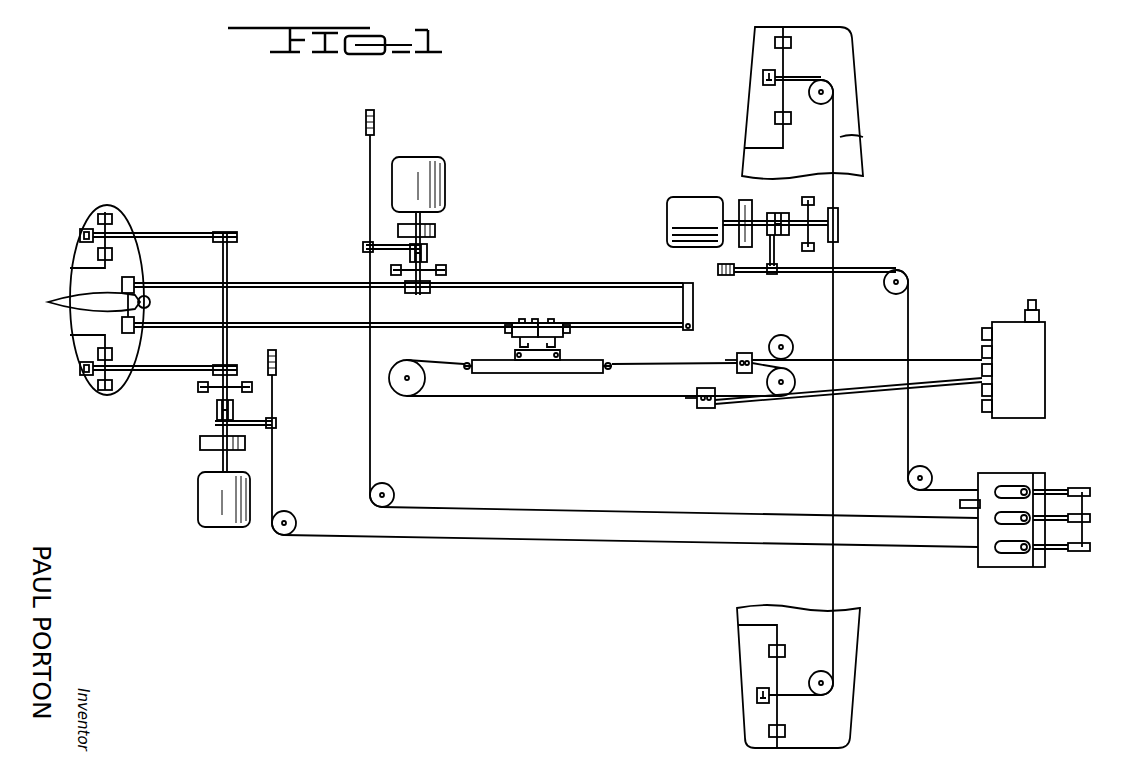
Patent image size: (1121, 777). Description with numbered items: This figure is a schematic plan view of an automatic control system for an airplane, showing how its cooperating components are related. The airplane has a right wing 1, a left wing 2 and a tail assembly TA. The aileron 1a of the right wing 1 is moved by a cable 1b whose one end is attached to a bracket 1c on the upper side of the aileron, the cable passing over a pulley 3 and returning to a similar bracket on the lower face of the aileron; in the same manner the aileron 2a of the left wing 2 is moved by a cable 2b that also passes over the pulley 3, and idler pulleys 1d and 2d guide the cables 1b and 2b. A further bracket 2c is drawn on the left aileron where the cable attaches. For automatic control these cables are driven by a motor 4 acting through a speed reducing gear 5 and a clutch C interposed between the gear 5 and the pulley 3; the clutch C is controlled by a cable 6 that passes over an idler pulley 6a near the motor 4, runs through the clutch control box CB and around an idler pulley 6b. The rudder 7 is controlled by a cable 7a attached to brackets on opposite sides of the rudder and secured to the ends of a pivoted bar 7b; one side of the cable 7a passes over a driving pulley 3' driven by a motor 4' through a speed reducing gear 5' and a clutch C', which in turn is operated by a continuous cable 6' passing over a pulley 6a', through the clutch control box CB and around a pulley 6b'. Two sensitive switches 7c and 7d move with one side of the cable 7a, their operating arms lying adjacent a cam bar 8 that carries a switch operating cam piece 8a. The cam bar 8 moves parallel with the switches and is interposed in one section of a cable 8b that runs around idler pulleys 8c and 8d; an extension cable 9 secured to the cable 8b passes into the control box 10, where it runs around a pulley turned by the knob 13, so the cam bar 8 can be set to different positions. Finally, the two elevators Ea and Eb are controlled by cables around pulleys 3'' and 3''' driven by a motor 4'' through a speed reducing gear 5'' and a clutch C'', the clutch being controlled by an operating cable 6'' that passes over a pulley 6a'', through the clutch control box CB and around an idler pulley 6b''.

The tail assembly TA is at (118, 230).
The elevator Ea is at (80, 236).
The elevator Eb is at (80, 369).
The rudder 7 is at (62, 306).
The cable 7a is at (322, 322).
The pivoted bar 7b is at (695, 318).
The sensitive switch 7c is at (553, 322).
The sensitive switch 7d is at (530, 323).
The cam bar 8 is at (553, 374).
The switch operating cam piece 8a is at (527, 362).
The cable 8b is at (700, 364).
The idler pulley 8c is at (408, 397).
The idler pulley 8d is at (781, 397).
The extension cable 9 is at (870, 370).
The knob 13 is at (975, 363).
The control box 10 is at (1013, 359).
The right wing 1 is at (855, 667).
The aileron 1a is at (745, 680).
The cable 1b is at (834, 584).
The bracket 1c is at (757, 702).
The idler pulley 1d is at (818, 698).
The left wing 2 is at (862, 102).
The aileron 2a is at (748, 102).
The cable 2b is at (863, 137).
The lever 2c is at (762, 72).
The idler pulley 2d is at (821, 80).
The pulley 3 is at (834, 224).
The driving pulley 3' is at (425, 296).
The pulley 3'' is at (239, 352).
The pulley 3''' is at (237, 356).
The motor 4 is at (747, 211).
The motor 4' is at (429, 226).
The motor 4'' is at (224, 513).
The speed reducing gear 5 is at (730, 213).
The speed reducing gear 5' is at (432, 233).
The speed reducing gear 5'' is at (204, 450).
The clutch C is at (777, 230).
The clutch C' is at (410, 258).
The clutch C'' is at (225, 405).
The cable 6 is at (931, 380).
The continuous cable 6' is at (655, 326).
The operating cable 6'' is at (625, 461).
The idler pulley 6a is at (807, 282).
The pulley 6a' is at (352, 122).
The pulley 6a'' is at (291, 366).
The idler pulley 6b is at (1061, 501).
The pulley 6b' is at (1074, 511).
The idler pulley 6b'' is at (1061, 565).
The clutch control box CB is at (1002, 568).